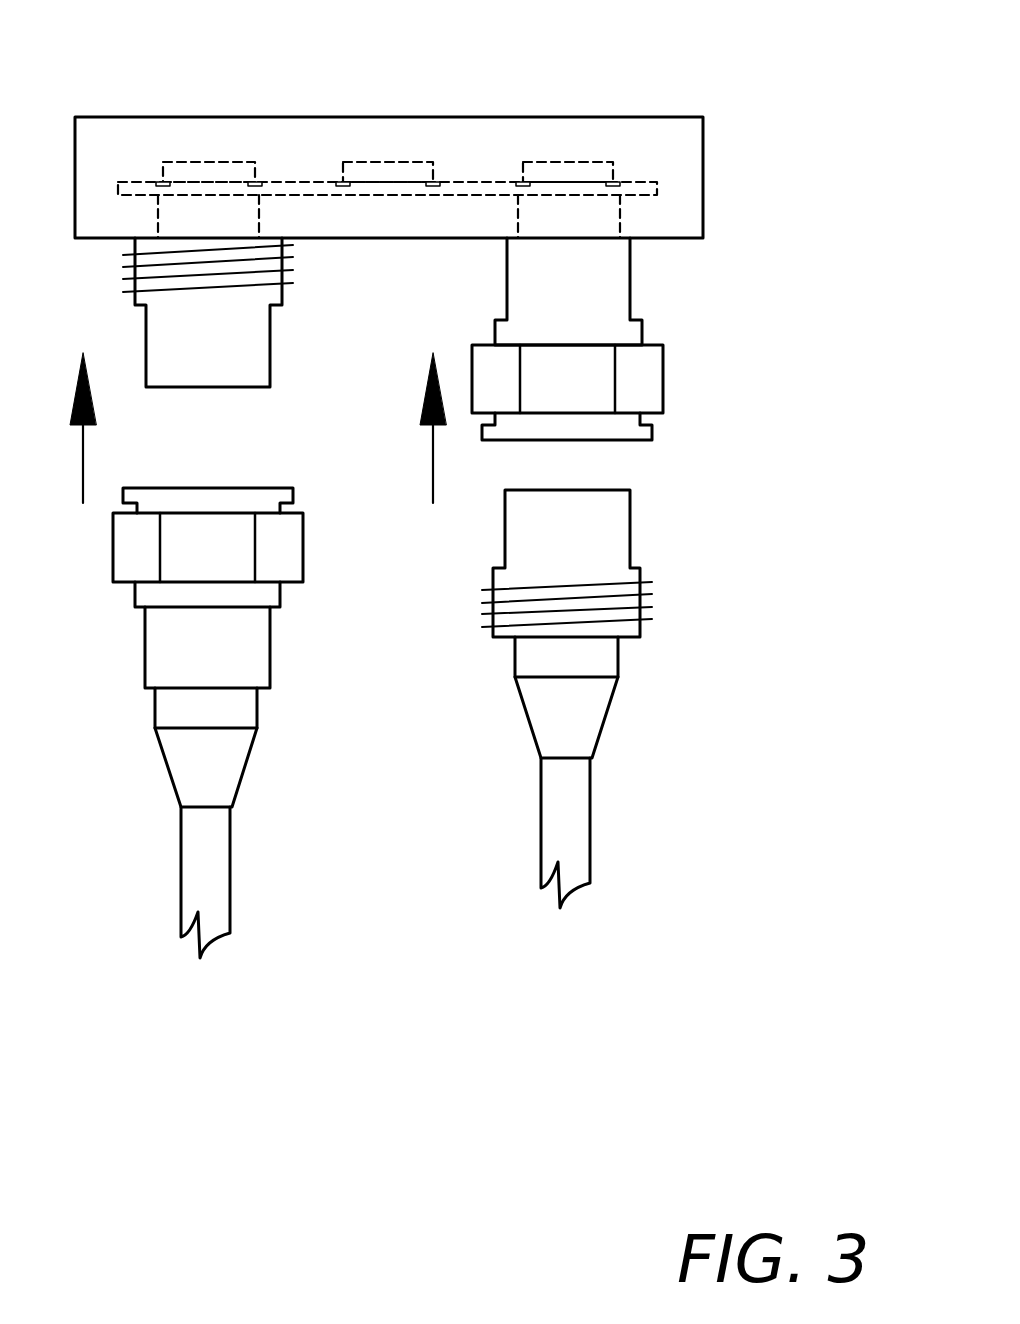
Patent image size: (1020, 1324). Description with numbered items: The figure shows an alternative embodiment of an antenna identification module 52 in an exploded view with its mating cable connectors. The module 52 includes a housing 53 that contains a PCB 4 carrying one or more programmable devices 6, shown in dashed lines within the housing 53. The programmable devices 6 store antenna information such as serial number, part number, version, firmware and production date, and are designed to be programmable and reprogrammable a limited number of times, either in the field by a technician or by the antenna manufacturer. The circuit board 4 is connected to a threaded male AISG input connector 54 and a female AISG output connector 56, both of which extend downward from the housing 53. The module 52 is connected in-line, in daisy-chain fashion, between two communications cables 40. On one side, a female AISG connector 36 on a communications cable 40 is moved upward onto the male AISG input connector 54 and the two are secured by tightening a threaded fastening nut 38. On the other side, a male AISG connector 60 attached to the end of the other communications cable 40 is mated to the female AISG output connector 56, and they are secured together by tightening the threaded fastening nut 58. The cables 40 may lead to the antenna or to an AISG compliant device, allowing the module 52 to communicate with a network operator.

The antenna identification module 52 is at (730, 70).
The housing 53 is at (703, 117).
The PCB 4 is at (657, 182).
The programmable devices 6 is at (212, 158).
The male AISG input connector 54 is at (270, 343).
The threaded fastening nut 58 is at (663, 382).
The female AISG output connector 56 is at (652, 440).
The female AISG connector 36 is at (293, 490).
The threaded fastening nut 38 is at (303, 548).
The male AISG connector 60 is at (630, 530).
The communications cable 40 is at (232, 870).